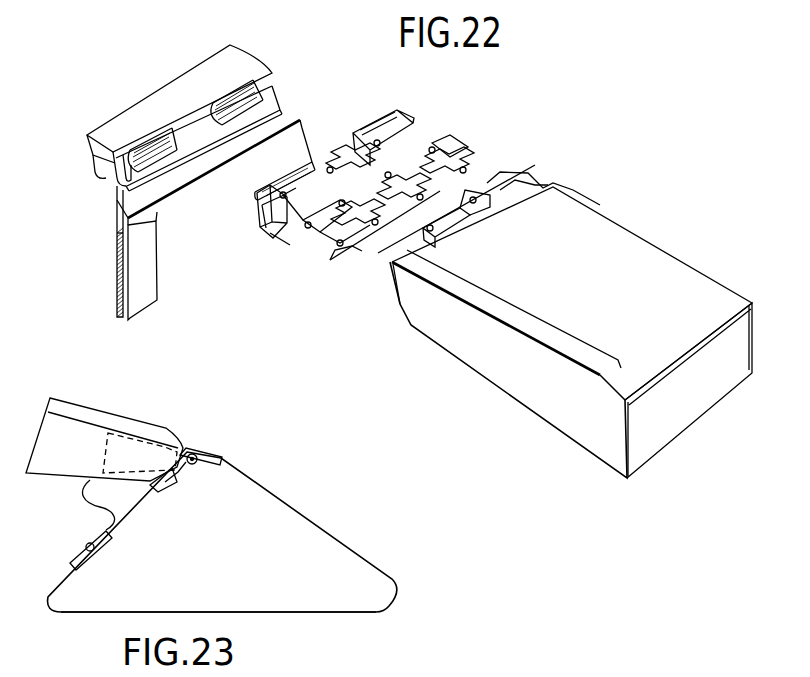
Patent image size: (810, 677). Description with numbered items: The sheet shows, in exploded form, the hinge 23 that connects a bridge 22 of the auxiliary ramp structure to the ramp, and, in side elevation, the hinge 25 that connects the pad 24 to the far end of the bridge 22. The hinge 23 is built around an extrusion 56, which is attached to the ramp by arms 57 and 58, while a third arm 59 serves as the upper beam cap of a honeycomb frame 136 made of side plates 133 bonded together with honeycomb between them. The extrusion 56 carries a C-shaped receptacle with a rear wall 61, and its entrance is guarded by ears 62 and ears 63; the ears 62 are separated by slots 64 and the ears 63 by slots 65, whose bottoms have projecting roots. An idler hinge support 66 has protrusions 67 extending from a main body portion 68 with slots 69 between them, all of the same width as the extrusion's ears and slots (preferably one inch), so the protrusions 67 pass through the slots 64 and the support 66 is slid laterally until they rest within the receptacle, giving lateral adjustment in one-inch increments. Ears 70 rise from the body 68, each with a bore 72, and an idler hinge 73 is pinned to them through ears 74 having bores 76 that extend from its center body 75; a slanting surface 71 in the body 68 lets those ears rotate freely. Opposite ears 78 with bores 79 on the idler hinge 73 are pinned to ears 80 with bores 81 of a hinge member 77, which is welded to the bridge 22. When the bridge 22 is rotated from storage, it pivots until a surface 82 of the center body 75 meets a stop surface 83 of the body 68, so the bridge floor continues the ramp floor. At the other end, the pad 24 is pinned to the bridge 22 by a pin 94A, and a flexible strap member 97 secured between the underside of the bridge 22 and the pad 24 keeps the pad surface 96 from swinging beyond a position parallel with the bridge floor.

In FIG. 22, the bridge 22 is at (543, 423).
In FIG. 23, the bridge 22 is at (128, 420).
In FIG. 22, the hinge 23 is at (392, 98).
In FIG. 23, the pad 24 is at (351, 613).
In FIG. 23, the hinge 25 is at (195, 451).
In FIG. 22, the extrusion 56 is at (90, 205).
In FIG. 22, the arm 57 is at (112, 122).
In FIG. 22, the arm 58 is at (87, 178).
In FIG. 22, the third arm 59 is at (120, 222).
In FIG. 22, the rear wall 61 is at (97, 170).
In FIG. 22, the ears 62 is at (148, 130).
In FIG. 22, the ears 63 is at (153, 220).
In FIG. 22, the slots 64 is at (184, 118).
In FIG. 22, the slots 65 is at (276, 98).
In FIG. 22, the idler hinge support 66 is at (270, 244).
In FIG. 22, the protrusions 67 is at (257, 203).
In FIG. 22, the main body portion 68 is at (266, 228).
In FIG. 22, the slots 69 is at (305, 178).
In FIG. 22, the ears 70 is at (396, 122).
In FIG. 22, the slanting surface 71 is at (300, 235).
In FIG. 22, the bore 72 is at (368, 132).
In FIG. 22, the idler hinge 73 is at (476, 150).
In FIG. 22, the ears 74 is at (445, 140).
In FIG. 22, the center body 75 is at (452, 165).
In FIG. 22, the bores 76 is at (308, 222).
In FIG. 22, the hinge member 77 is at (545, 186).
In FIG. 22, the ears 78 is at (500, 163).
In FIG. 22, the bores 79 is at (325, 236).
In FIG. 22, the ears 80 is at (497, 193).
In FIG. 22, the bores 81 is at (432, 248).
In FIG. 22, the surface 82 is at (310, 240).
In FIG. 22, the stop surface 83 is at (285, 238).
In FIG. 23, the pin 94A is at (200, 467).
In FIG. 23, the surface 96 is at (310, 522).
In FIG. 23, the strap member 97 is at (90, 503).
In FIG. 22, the side plate 133 is at (142, 303).
In FIG. 22, the honeycomb frame 136 is at (117, 283).